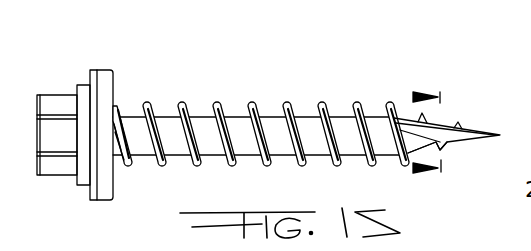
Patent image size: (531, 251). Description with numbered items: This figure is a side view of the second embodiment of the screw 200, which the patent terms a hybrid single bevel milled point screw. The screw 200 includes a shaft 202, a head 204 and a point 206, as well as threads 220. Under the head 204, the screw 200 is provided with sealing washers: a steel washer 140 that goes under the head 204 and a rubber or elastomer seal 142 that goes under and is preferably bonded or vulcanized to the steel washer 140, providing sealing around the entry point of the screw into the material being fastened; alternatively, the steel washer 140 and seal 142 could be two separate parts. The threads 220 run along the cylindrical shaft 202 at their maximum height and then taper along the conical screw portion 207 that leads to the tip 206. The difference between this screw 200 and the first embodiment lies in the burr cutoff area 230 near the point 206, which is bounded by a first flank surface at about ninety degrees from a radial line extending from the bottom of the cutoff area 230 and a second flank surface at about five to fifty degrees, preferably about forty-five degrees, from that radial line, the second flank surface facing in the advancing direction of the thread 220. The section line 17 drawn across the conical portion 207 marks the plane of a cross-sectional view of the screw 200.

The screw 200 is at (307, 95).
The head 204 is at (53, 103).
The steel washer 140 is at (93, 70).
The rubber or elastomer seal 142 is at (105, 75).
The shaft 202 is at (237, 127).
The threads 220 is at (200, 158).
The point 206 is at (500, 133).
The burr cutoff area 230 is at (440, 125).
The conical screw portion 207 is at (448, 152).
The section line 17 is at (416, 133).